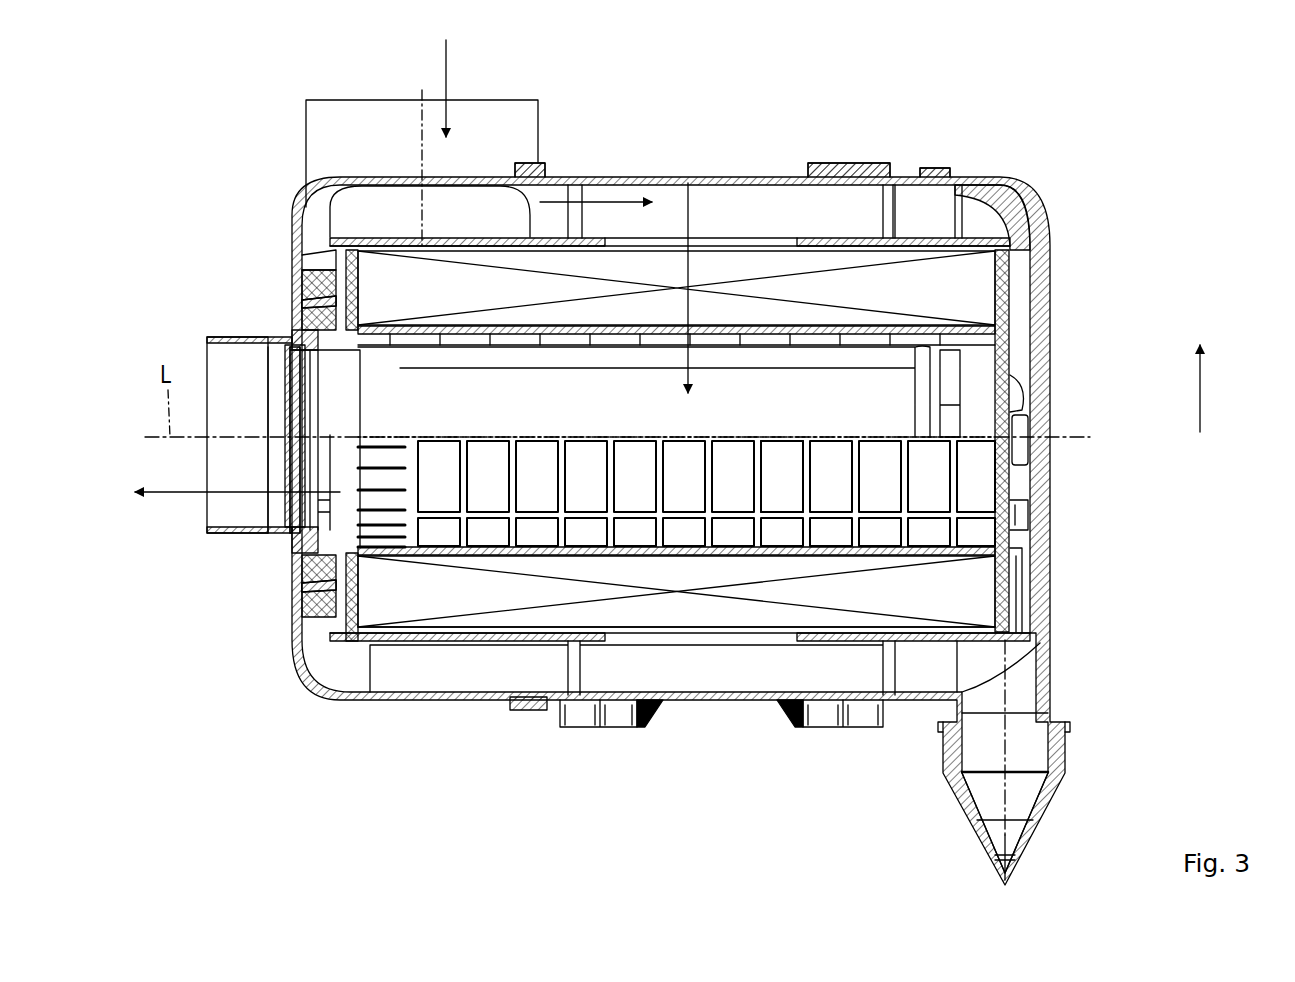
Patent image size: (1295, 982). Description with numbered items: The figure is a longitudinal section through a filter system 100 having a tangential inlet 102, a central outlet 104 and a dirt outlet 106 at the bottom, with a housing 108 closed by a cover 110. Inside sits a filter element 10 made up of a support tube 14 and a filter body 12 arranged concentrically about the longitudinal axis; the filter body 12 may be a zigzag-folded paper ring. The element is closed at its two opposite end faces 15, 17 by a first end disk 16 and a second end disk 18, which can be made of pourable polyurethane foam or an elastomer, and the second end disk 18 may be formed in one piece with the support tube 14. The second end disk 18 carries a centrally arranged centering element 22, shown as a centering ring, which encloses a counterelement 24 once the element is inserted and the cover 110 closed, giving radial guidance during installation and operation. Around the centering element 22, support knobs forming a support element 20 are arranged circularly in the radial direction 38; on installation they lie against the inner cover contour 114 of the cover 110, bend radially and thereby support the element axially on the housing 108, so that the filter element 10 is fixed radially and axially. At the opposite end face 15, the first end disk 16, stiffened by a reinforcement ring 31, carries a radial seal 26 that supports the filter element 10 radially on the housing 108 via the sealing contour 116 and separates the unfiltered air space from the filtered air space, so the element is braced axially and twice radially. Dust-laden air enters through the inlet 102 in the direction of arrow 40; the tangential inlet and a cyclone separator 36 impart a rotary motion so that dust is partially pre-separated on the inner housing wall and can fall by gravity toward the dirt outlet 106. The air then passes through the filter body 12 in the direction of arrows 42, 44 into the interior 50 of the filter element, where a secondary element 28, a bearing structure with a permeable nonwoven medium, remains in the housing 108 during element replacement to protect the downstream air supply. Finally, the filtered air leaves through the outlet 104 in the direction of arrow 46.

The filter element 10 is at (705, 632).
The filter body 12 is at (753, 608).
The support tube 14 is at (733, 545).
The end face 15 is at (290, 557).
The first end disk 16 is at (298, 283).
The end face 17 is at (1030, 582).
The second end disk 18 is at (1030, 513).
The support element 20 is at (1028, 330).
The centering element 22 is at (1048, 405).
The counterelement 24 is at (1028, 425).
The radial seal 26 is at (292, 590).
The secondary element 28 is at (756, 417).
The reinforcement ring 31 is at (293, 265).
The cyclone separator 36 is at (415, 240).
The radial direction 38 is at (1200, 393).
The arrow 40 is at (444, 58).
The arrow 42 is at (622, 197).
The arrow 44 is at (693, 214).
The arrow 46 is at (170, 497).
The interior 50 is at (696, 490).
The filter system 100 is at (1150, 192).
The inlet 102 is at (496, 113).
The outlet 104 is at (235, 468).
The dirt outlet 106 is at (1063, 762).
The housing 108 is at (445, 705).
The cover 110 is at (1015, 163).
The inner cover contour 114 is at (1013, 290).
The sealing contour 116 is at (352, 577).